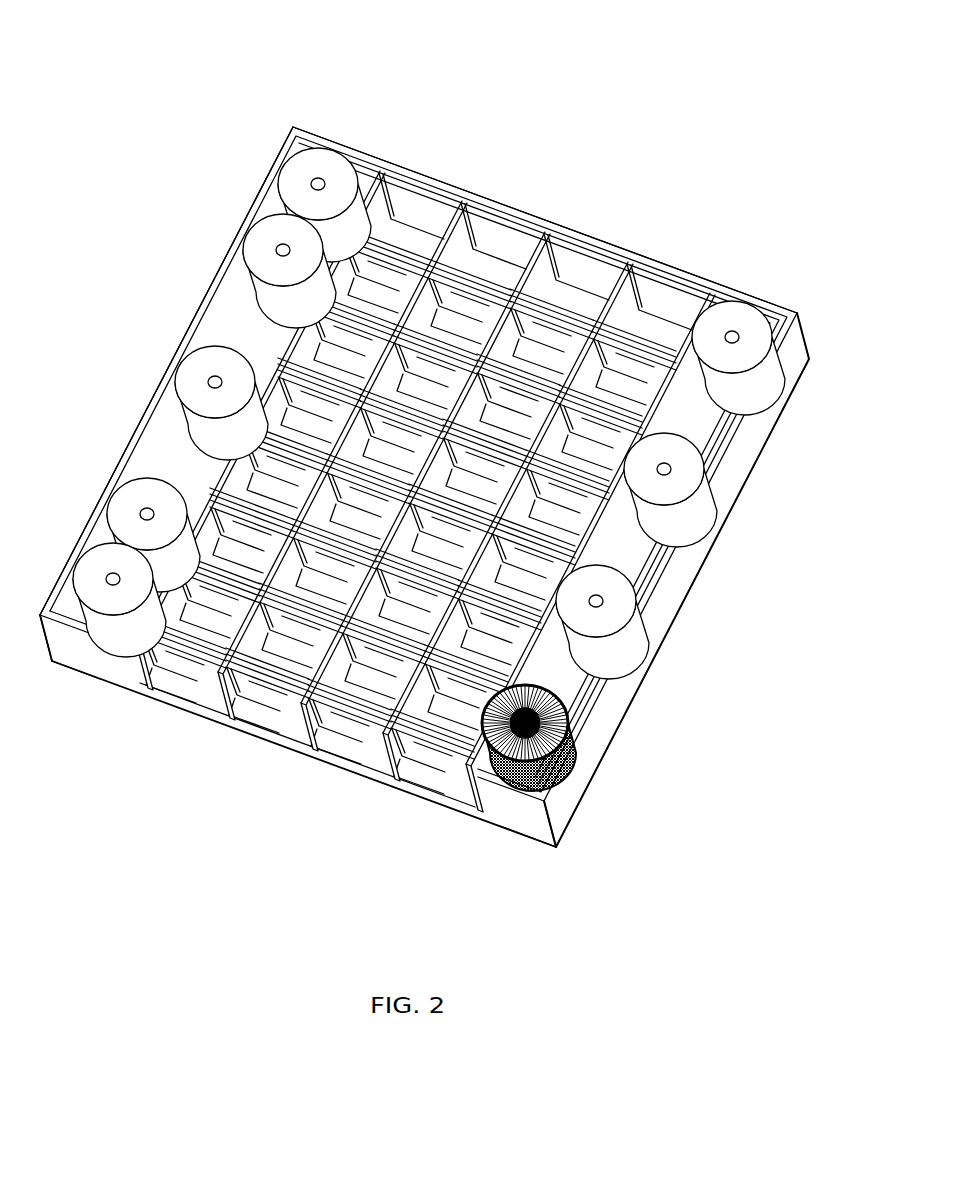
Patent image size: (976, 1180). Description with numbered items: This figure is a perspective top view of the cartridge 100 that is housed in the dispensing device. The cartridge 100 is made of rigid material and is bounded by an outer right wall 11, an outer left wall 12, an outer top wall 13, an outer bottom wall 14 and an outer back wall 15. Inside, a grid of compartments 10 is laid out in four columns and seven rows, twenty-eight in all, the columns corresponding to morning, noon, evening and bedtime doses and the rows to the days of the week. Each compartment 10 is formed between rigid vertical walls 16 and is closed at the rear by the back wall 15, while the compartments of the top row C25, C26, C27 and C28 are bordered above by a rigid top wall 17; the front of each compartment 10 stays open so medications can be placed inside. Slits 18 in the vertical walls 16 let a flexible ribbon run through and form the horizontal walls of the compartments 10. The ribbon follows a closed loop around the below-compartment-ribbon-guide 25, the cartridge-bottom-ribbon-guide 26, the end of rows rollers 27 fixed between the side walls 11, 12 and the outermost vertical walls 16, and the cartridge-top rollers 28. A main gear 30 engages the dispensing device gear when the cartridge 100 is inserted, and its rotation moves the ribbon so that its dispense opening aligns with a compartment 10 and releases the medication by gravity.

The cartridge 100 is at (115, 115).
The compartment 10 is at (662, 325).
The outer right wall 11 is at (617, 697).
The outer left wall 12 is at (172, 393).
The outer top wall 13 is at (590, 225).
The outer bottom wall 14 is at (100, 665).
The outer back wall 15 is at (190, 697).
The vertical wall 16 is at (270, 377).
The rigid top wall 17 is at (412, 210).
The slit 18 is at (243, 700).
The below-compartment-ribbon-guide 25 is at (362, 735).
The cartridge-bottom-ribbon-guide 26 is at (115, 577).
The end of rows roller 27 is at (265, 252).
The cartridge-top roller 28 is at (302, 178).
The main gear 30 is at (570, 766).
The top row compartment C25 is at (345, 410).
The top row compartment C26 is at (503, 227).
The top row compartment C27 is at (470, 512).
The top row compartment C28 is at (622, 529).